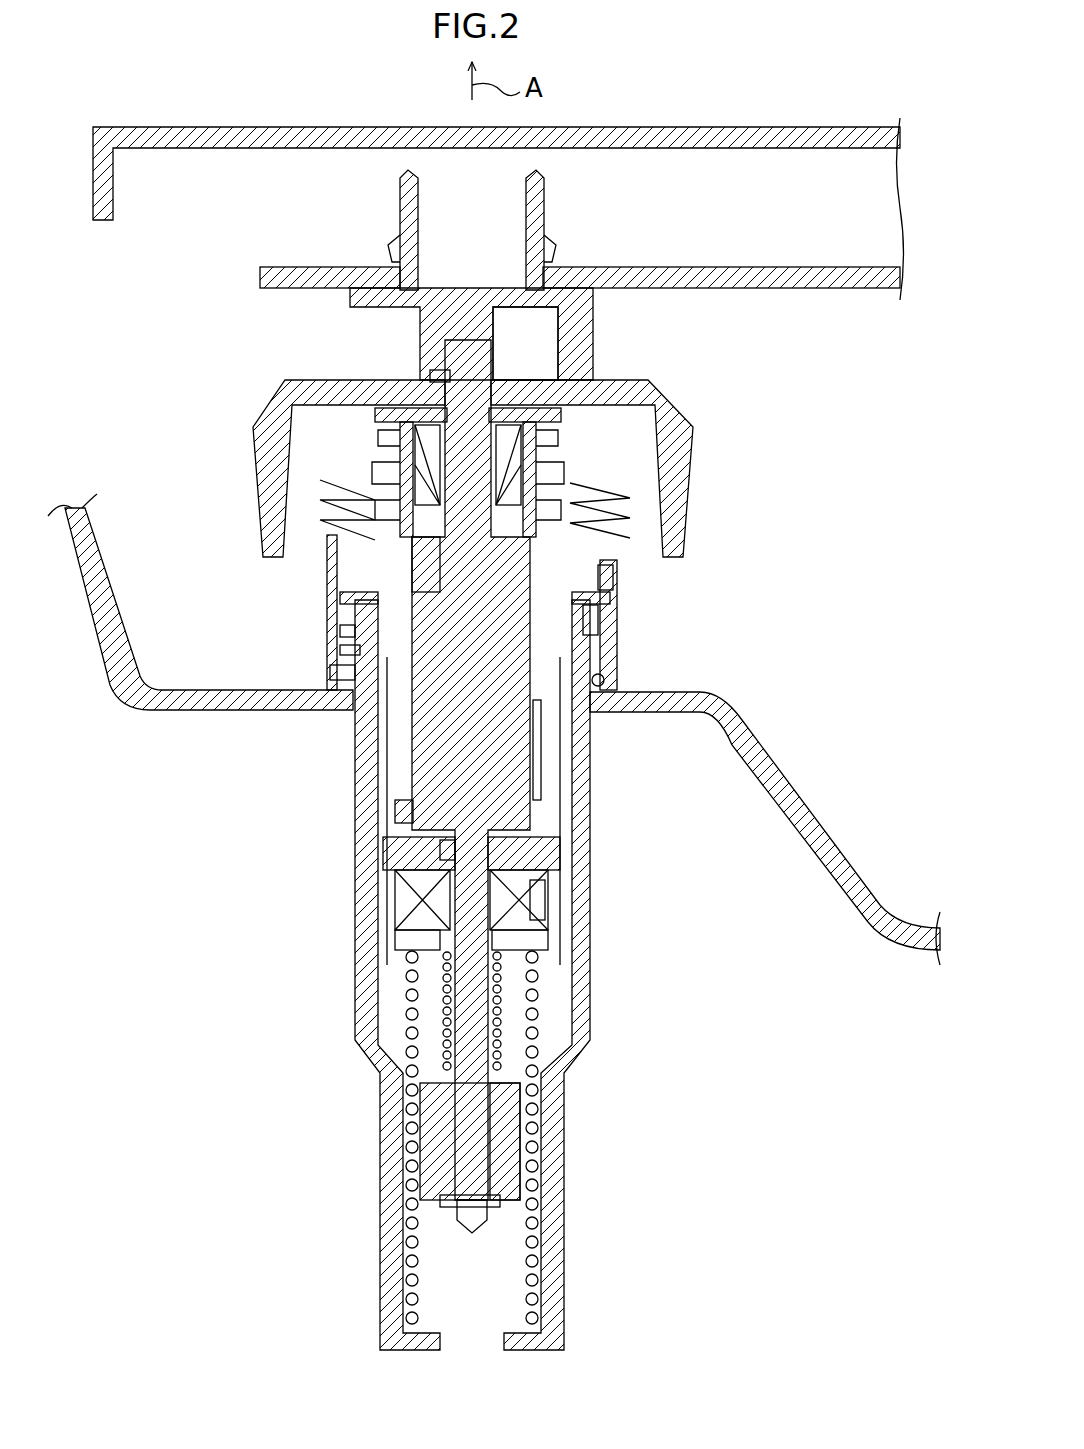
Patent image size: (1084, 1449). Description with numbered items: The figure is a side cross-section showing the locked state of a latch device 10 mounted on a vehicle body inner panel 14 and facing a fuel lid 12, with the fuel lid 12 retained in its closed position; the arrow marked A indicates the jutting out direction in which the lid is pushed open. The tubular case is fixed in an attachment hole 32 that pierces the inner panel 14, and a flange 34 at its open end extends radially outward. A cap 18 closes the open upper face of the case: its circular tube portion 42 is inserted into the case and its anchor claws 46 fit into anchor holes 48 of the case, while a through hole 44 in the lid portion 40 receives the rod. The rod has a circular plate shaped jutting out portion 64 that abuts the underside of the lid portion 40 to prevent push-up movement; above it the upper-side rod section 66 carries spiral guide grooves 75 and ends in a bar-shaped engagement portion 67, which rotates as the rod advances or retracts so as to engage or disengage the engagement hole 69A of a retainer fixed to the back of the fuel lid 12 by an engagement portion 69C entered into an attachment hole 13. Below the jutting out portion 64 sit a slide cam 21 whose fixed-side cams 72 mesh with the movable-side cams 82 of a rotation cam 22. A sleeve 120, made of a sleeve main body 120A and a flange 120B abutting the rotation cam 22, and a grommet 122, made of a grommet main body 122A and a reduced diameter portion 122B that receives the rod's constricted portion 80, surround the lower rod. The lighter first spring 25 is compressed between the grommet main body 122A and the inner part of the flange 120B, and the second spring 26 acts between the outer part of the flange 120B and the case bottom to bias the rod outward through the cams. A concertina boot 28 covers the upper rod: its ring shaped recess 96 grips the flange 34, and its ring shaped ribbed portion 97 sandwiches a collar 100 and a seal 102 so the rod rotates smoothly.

The latch device 10 is at (770, 370).
The fuel lid 12 is at (722, 127).
The attachment hole 13 is at (530, 270).
The vehicle body inner panel 14 is at (780, 690).
The cap 18 is at (598, 572).
The slide cam 21 is at (560, 850).
The rotation cam 22 is at (548, 900).
The first spring 25 is at (560, 1040).
The second spring 26 is at (612, 557).
The boot 28 is at (322, 548).
The attachment hole 32 is at (580, 728).
The flange 34 is at (340, 670).
The lid portion 40 is at (592, 612).
The circular tube portion 42 is at (560, 780).
The through hole 44 is at (413, 602).
The anchor claws 46 is at (350, 648).
The anchor holes 48 is at (345, 636).
The jutting out portion 64 is at (395, 808).
The upper-side rod section 66 is at (560, 385).
The engagement portion 67 is at (505, 325).
The engagement hole 69A is at (440, 380).
The engagement portion 69C is at (400, 222).
The fixed-side cams 72 is at (545, 910).
The guide grooves 75 is at (537, 725).
The constricted portion 80 is at (470, 1222).
The movable-side cams 82 is at (440, 860).
The ring shaped recess 96 is at (605, 680).
The ring shaped ribbed portion 97 is at (606, 500).
The collar 100 is at (384, 440).
The seal 102 is at (382, 472).
The sleeve 120 is at (538, 1000).
The sleeve main body 120A is at (443, 1000).
The flange 120B is at (420, 940).
The grommet 122 is at (525, 1150).
The grommet main body 122A is at (430, 1140).
The reduced diameter portion 122B is at (505, 1200).